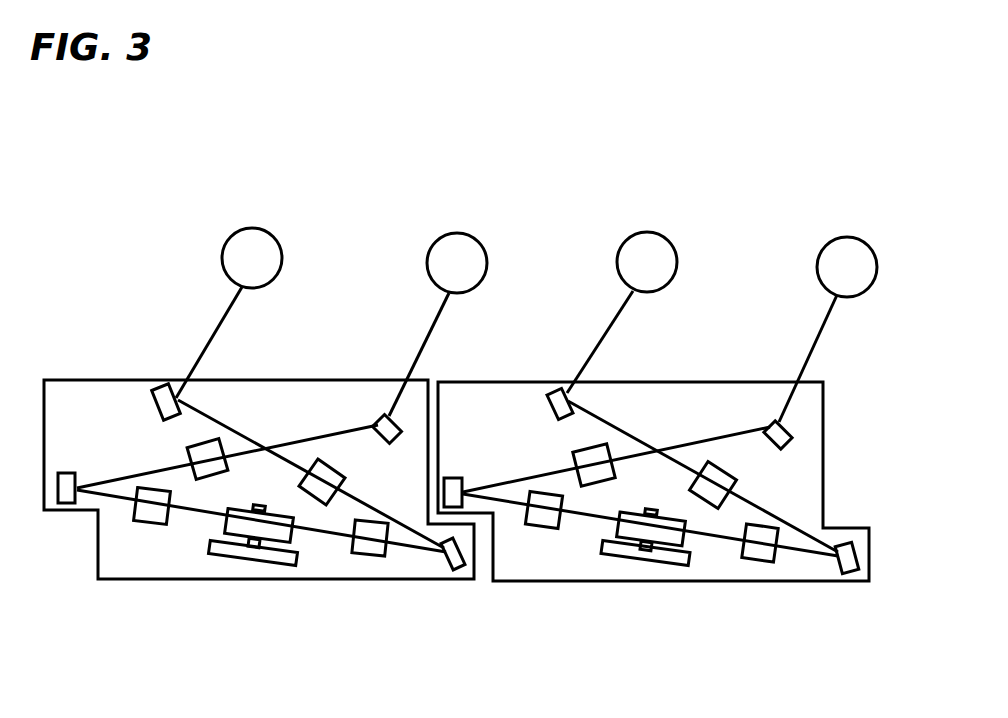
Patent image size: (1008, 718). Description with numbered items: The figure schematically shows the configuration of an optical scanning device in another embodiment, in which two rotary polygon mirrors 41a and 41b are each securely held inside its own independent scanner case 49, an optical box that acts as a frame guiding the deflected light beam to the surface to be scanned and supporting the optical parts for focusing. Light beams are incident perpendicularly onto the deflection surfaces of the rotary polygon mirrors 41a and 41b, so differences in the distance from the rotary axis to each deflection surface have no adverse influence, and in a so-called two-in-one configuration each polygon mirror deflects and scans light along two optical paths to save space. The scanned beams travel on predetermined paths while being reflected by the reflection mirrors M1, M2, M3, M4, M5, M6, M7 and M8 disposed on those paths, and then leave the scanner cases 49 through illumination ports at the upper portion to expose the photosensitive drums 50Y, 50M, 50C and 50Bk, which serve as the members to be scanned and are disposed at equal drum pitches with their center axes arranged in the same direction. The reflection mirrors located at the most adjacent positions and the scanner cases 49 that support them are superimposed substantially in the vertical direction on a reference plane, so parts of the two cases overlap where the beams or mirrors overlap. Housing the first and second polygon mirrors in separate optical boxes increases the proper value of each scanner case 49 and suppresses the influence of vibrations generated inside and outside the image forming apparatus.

The scanner case 49 is at (610, 583).
The photosensitive drum 50Y is at (232, 255).
The photosensitive drum 50M is at (455, 240).
The photosensitive drum 50C is at (627, 233).
The photosensitive drum 50Bk is at (825, 243).
The reflection mirror M1 is at (859, 553).
The reflection mirror M2 is at (556, 414).
The reflection mirror M3 is at (452, 477).
The reflection mirror M4 is at (791, 441).
The reflection mirror M5 is at (447, 571).
The reflection mirror M6 is at (158, 409).
The reflection mirror M7 is at (65, 504).
The reflection mirror M8 is at (386, 446).
The rotary polygon mirror 41a is at (662, 537).
The rotary polygon mirror 41b is at (247, 551).